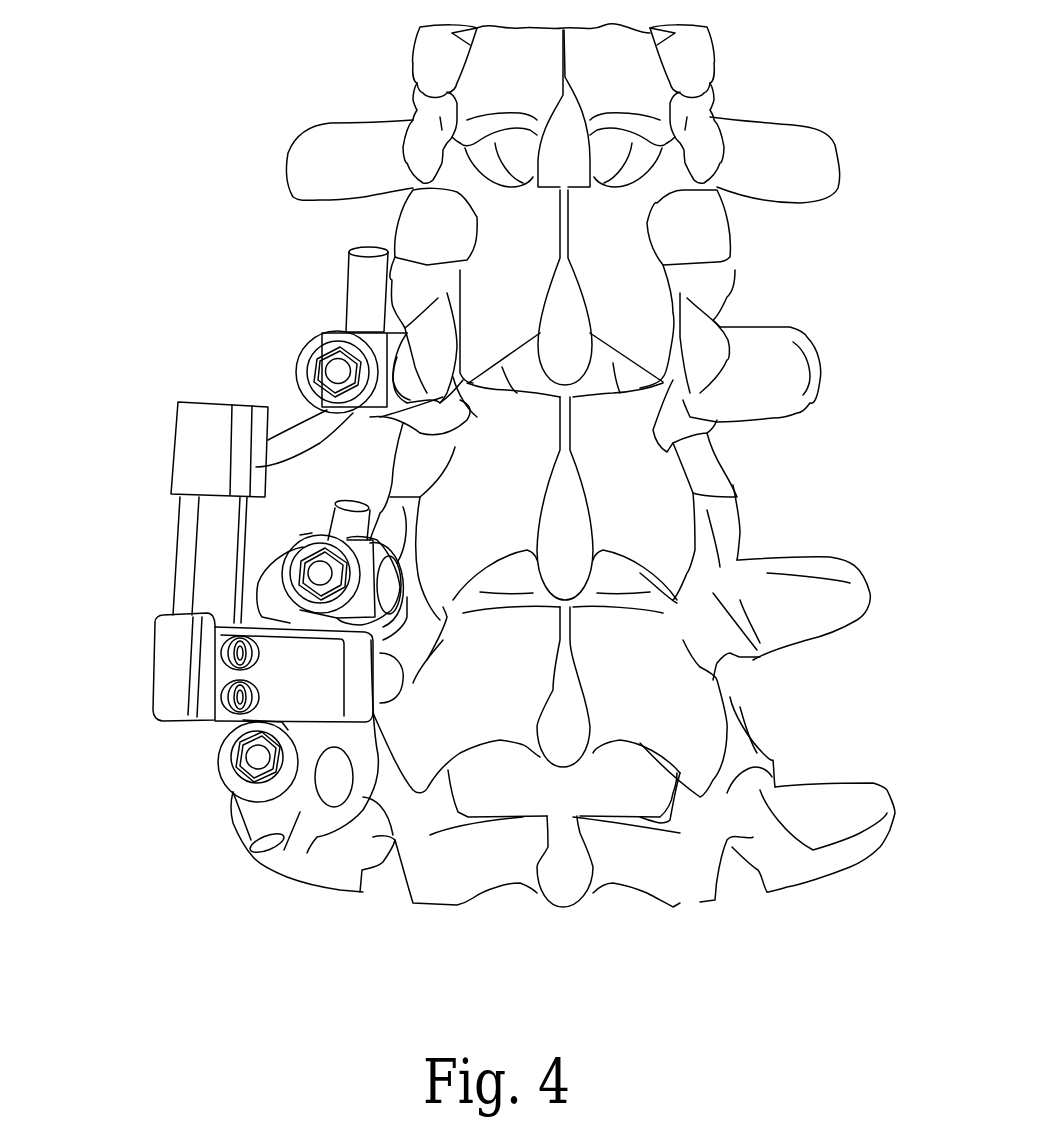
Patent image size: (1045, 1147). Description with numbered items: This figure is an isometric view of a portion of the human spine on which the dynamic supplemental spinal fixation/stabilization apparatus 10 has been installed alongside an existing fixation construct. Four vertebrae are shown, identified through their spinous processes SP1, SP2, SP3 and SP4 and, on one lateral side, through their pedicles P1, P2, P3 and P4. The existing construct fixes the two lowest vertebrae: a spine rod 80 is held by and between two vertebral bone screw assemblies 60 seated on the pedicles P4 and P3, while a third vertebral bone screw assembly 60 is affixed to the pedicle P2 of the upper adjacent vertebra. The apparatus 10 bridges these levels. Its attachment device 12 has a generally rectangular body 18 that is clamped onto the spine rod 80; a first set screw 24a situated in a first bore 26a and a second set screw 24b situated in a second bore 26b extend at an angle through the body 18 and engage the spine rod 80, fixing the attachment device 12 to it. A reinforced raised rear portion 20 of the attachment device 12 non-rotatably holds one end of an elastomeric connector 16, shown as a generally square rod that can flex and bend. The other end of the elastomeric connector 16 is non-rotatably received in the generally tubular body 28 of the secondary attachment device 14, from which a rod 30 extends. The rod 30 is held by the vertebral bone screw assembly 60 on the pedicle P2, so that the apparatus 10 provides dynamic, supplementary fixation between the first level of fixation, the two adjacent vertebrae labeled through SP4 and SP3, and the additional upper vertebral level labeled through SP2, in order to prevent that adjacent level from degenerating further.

The dynamic supplemental spinal fixation/stabilization apparatus 10 is at (132, 366).
The attachment device 12 is at (146, 664).
The secondary attachment device 14 is at (160, 425).
The elastomeric connector 16 is at (185, 535).
The body 18 is at (360, 687).
The raised rear portion 20 is at (162, 687).
The first set screw 24a is at (240, 635).
The second set screw 24b is at (260, 700).
The first bore 26a is at (235, 653).
The second bore 26b is at (222, 697).
The tubular body 28 is at (205, 425).
The rod 30 is at (360, 278).
The vertebral bone screw assembly 60 is at (290, 341).
The spine rod 80 is at (263, 837).
The first vertebra P1 is at (300, 157).
The pedicle P2 is at (403, 418).
The pedicle P3 is at (272, 587).
The pedicle P4 is at (243, 810).
The spinous process SP1 is at (590, 357).
The spinous process SP2 is at (590, 586).
The spinous process SP3 is at (590, 748).
The spinous process SP4 is at (590, 890).